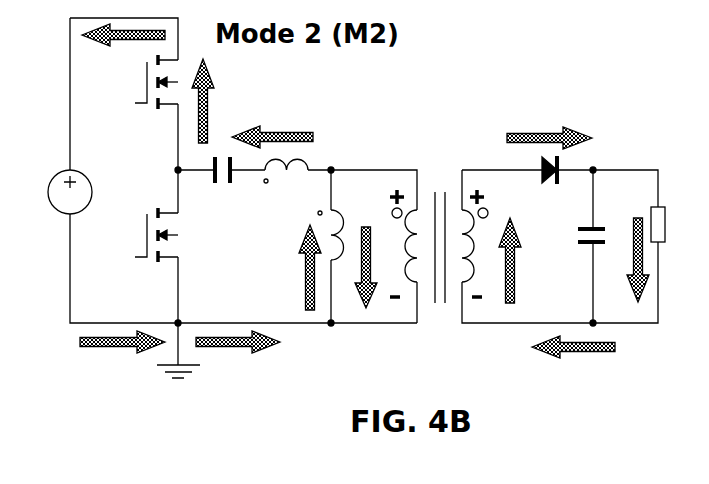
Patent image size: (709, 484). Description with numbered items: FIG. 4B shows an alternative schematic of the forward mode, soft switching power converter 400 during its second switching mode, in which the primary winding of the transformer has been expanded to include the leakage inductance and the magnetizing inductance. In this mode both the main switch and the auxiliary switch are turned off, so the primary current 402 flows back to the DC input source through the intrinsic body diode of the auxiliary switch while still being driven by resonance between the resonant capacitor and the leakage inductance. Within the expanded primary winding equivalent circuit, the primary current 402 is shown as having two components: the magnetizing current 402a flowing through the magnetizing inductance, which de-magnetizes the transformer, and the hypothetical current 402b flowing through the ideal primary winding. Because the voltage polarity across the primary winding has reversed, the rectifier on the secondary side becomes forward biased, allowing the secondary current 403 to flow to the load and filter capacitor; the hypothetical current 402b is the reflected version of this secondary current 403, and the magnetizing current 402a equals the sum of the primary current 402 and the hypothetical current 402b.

The converter 400 is at (419, 110).
The primary current 402 is at (97, 44).
The magnetizing current 402a is at (305, 278).
The hypothetical current 402b is at (373, 300).
The secondary current 403 is at (588, 136).